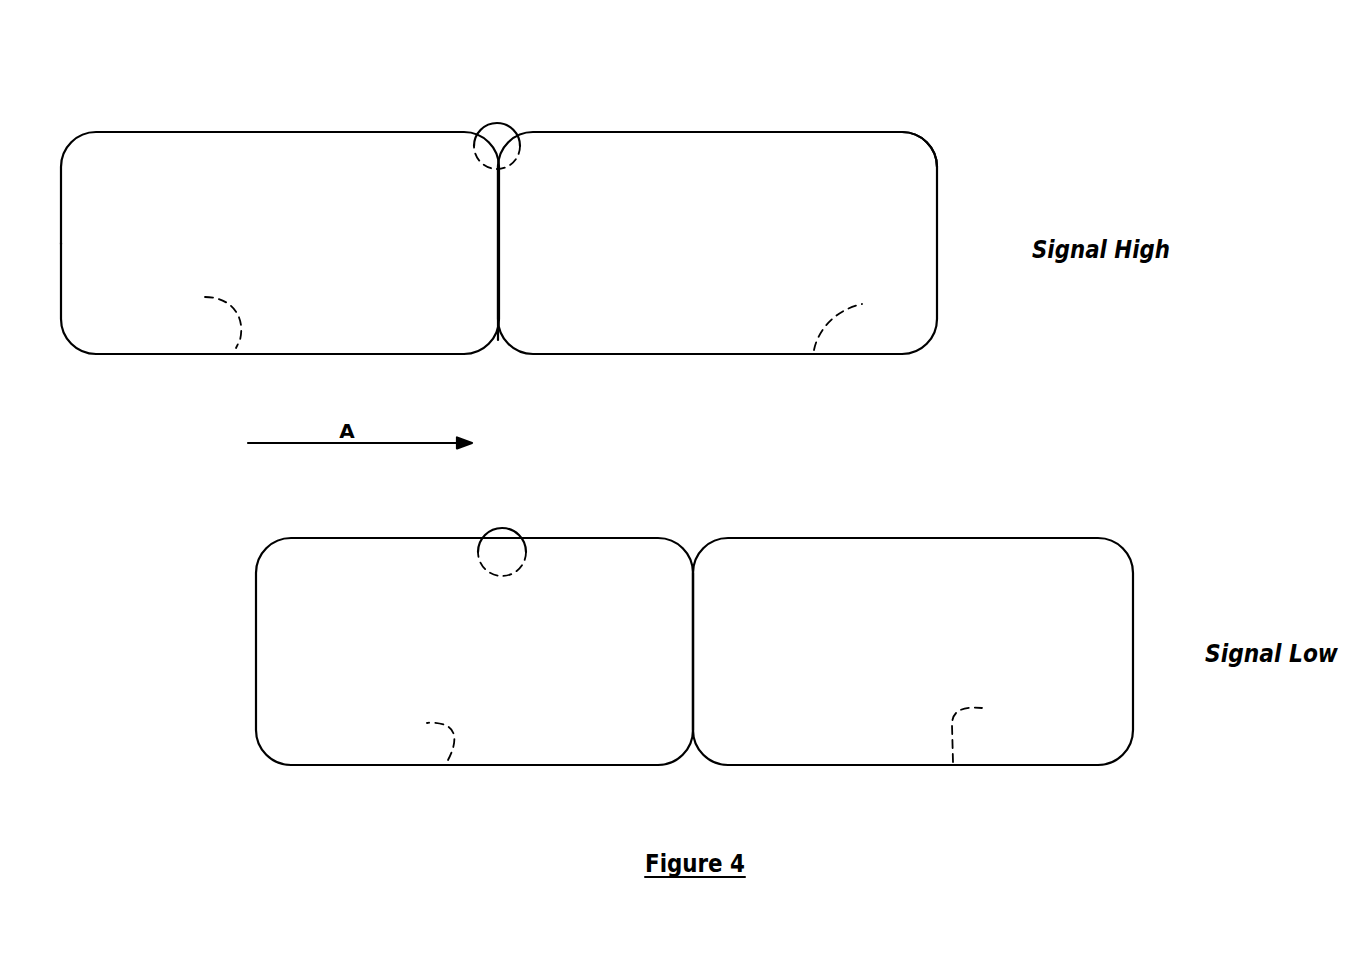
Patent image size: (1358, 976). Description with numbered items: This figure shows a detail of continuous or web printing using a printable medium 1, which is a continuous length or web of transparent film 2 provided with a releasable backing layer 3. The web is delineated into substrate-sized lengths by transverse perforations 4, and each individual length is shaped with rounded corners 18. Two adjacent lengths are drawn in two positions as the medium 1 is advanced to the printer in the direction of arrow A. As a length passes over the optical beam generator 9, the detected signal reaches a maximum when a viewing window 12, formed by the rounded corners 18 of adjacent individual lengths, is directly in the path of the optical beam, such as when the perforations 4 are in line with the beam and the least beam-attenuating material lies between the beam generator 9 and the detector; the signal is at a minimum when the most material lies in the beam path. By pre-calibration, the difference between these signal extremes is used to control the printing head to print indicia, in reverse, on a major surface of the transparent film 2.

The printable medium 1 is at (290, 103).
The transparent film 2 is at (236, 348).
The releasable backing layer 3 is at (891, 676).
The transverse perforations 4 is at (498, 265).
The optical beam generator 9 is at (488, 117).
The viewing window 12 is at (692, 550).
The rounded corners 18 is at (926, 140).